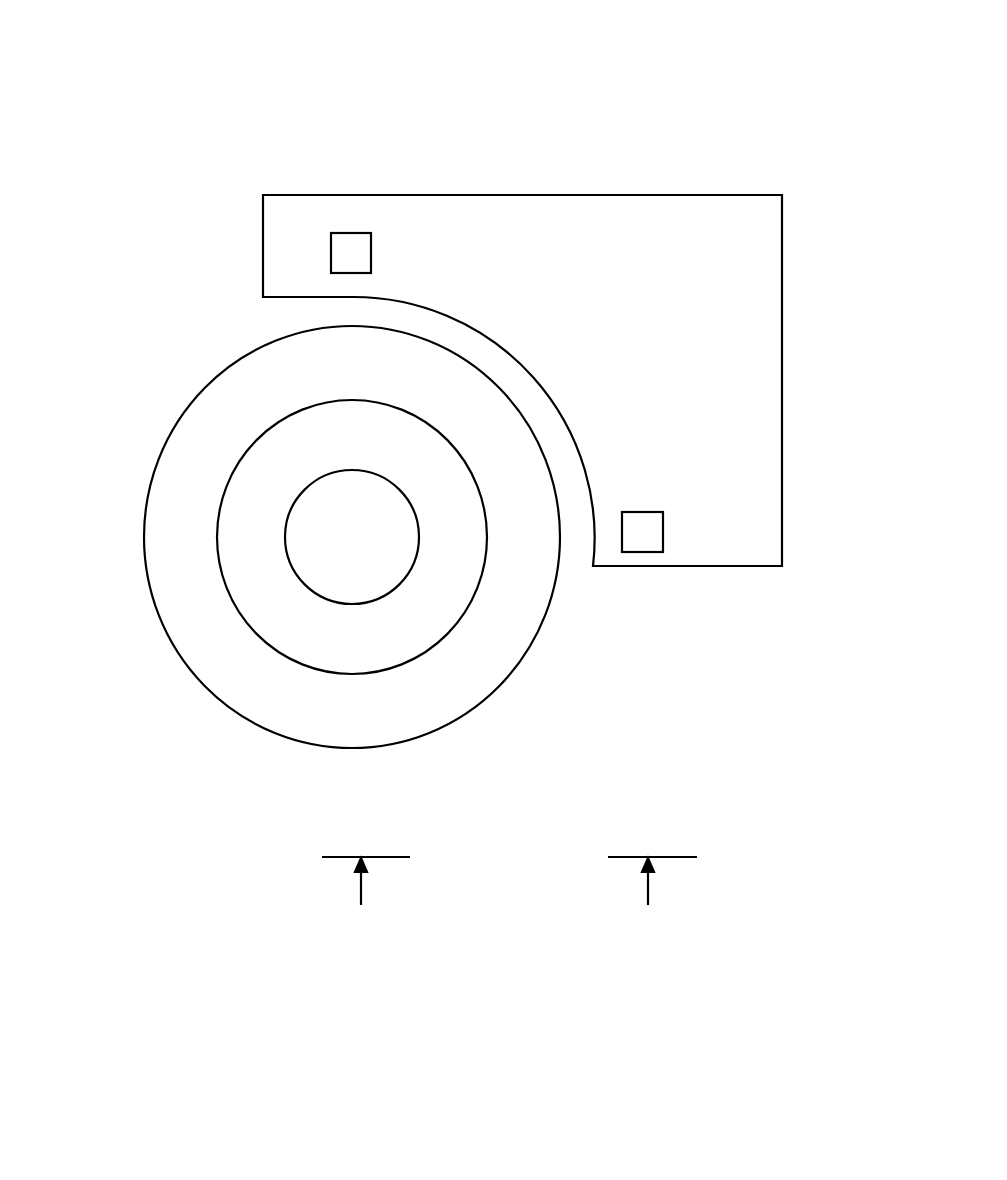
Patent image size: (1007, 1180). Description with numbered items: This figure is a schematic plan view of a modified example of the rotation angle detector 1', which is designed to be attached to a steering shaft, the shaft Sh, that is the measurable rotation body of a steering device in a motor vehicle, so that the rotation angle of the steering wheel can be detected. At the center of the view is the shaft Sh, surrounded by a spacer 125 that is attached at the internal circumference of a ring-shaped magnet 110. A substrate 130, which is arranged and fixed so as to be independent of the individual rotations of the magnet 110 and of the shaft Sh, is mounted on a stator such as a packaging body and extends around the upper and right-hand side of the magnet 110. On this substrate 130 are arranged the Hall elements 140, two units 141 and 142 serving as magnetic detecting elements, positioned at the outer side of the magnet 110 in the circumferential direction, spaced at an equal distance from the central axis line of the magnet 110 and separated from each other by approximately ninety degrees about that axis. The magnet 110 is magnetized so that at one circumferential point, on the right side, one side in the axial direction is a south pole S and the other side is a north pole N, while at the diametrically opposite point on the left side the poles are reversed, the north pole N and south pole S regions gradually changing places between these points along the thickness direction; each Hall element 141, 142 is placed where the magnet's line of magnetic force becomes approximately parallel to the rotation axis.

The rotation angle detector 1' is at (448, 586).
The magnet 110 is at (202, 688).
The spacer 125 is at (440, 642).
The substrate 130 is at (508, 195).
The Hall elements 140 is at (597, 378).
The Hall element 141 is at (663, 527).
The Hall element 142 is at (346, 233).
The shaft Sh is at (327, 500).
The north pole N is at (65, 618).
The south pole S is at (643, 615).